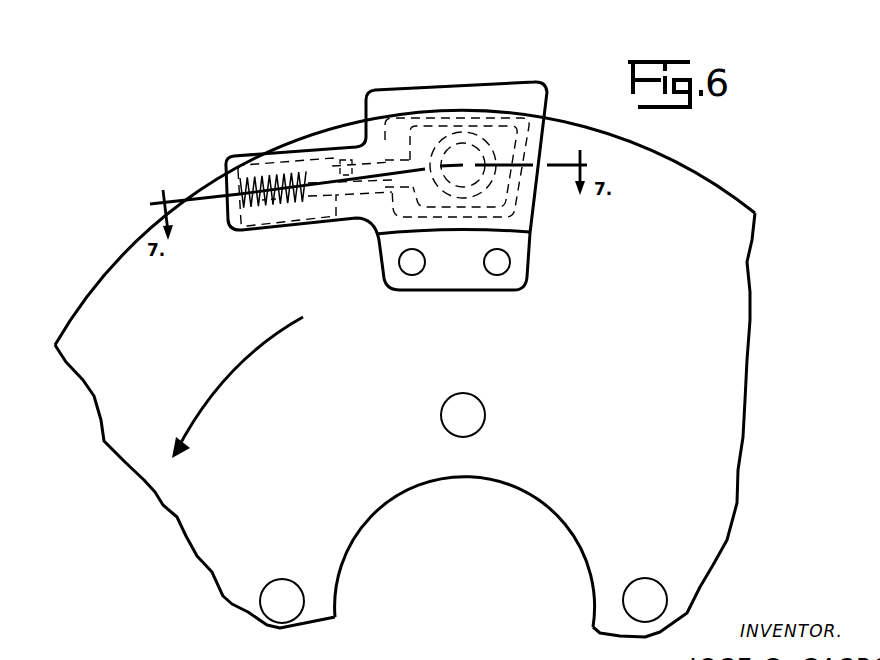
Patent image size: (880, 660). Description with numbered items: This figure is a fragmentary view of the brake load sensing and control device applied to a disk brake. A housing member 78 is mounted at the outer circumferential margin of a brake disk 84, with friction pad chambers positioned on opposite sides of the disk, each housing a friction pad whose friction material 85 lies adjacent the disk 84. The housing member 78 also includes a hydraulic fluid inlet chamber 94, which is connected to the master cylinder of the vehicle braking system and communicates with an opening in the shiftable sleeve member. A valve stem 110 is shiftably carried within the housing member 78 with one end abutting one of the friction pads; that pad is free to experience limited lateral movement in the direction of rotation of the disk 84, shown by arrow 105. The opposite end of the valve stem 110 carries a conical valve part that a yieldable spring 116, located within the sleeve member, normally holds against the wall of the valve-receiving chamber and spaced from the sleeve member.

The housing member 78 is at (510, 97).
The brake disk 84 is at (720, 207).
The friction material 85 is at (503, 188).
The hydraulic fluid inlet chamber 94 is at (266, 170).
The arrow 105 is at (240, 373).
The valve stem 110 is at (347, 165).
The yieldable spring 116 is at (268, 205).